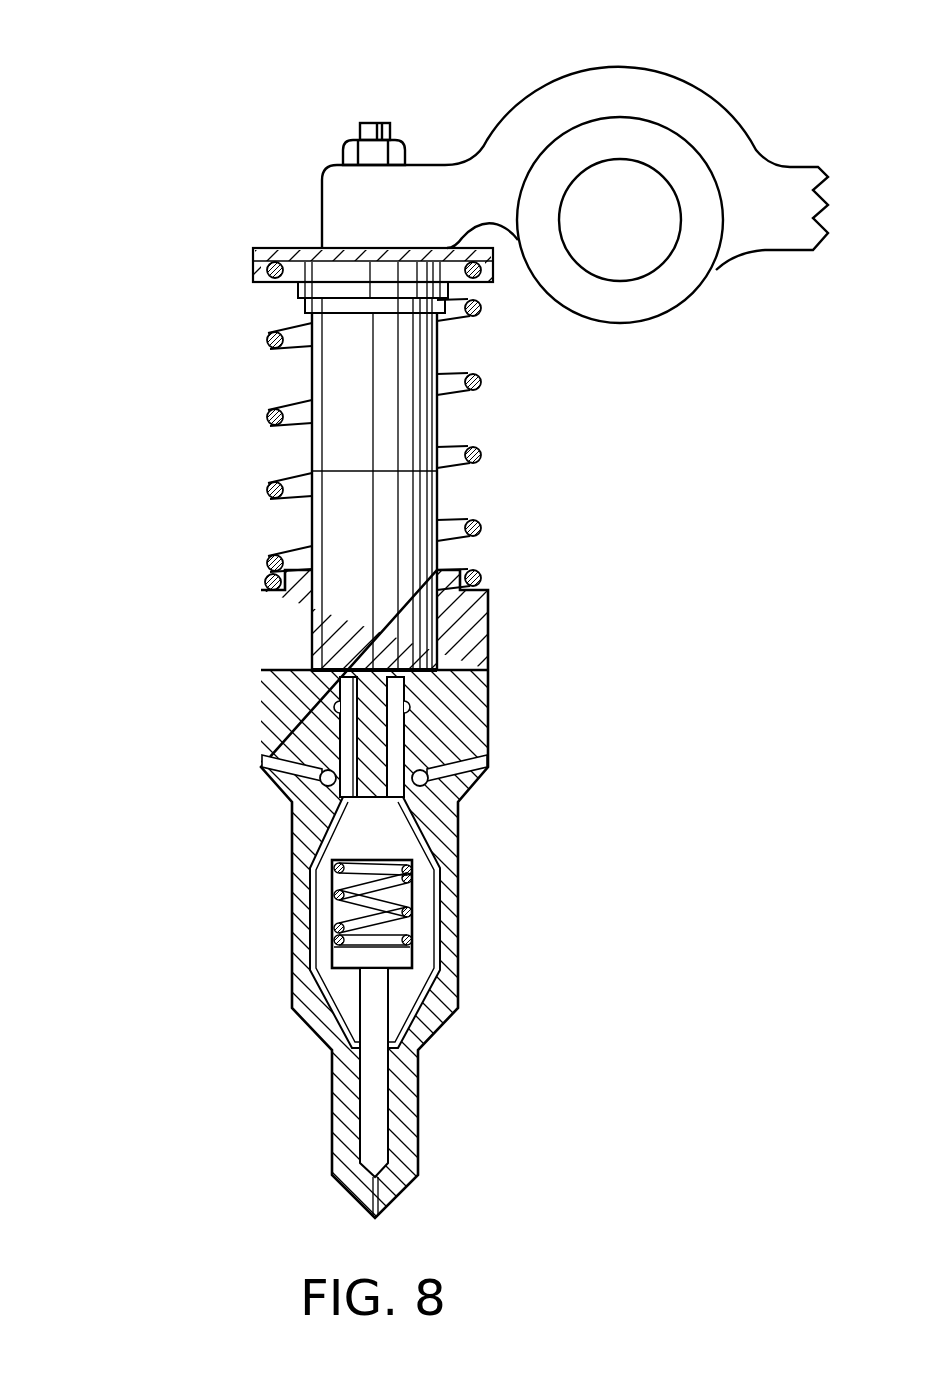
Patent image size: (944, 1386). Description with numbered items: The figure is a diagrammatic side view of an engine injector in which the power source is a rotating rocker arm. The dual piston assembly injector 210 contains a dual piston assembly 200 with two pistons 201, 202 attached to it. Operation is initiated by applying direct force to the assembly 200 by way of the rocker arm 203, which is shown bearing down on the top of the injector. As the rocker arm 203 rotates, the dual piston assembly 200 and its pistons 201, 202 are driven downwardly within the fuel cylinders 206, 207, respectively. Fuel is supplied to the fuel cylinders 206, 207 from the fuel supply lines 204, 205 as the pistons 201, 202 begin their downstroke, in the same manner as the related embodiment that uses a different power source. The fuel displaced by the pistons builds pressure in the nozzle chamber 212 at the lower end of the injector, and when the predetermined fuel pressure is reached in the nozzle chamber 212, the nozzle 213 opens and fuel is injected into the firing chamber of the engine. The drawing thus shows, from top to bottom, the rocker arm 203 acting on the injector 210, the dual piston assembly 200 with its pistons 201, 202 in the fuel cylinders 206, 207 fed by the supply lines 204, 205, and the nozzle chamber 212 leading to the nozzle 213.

The dual piston assembly 200 is at (177, 788).
The piston 201 is at (342, 739).
The piston 202 is at (407, 742).
The rocker arm 203 is at (562, 72).
The fuel supply line 204 is at (277, 790).
The fuel supply line 205 is at (463, 792).
The fuel cylinder 206 is at (338, 703).
The fuel cylinder 207 is at (406, 697).
The dual piston assembly injector 210 is at (207, 337).
The nozzle chamber 212 is at (400, 987).
The nozzle 213 is at (373, 1097).